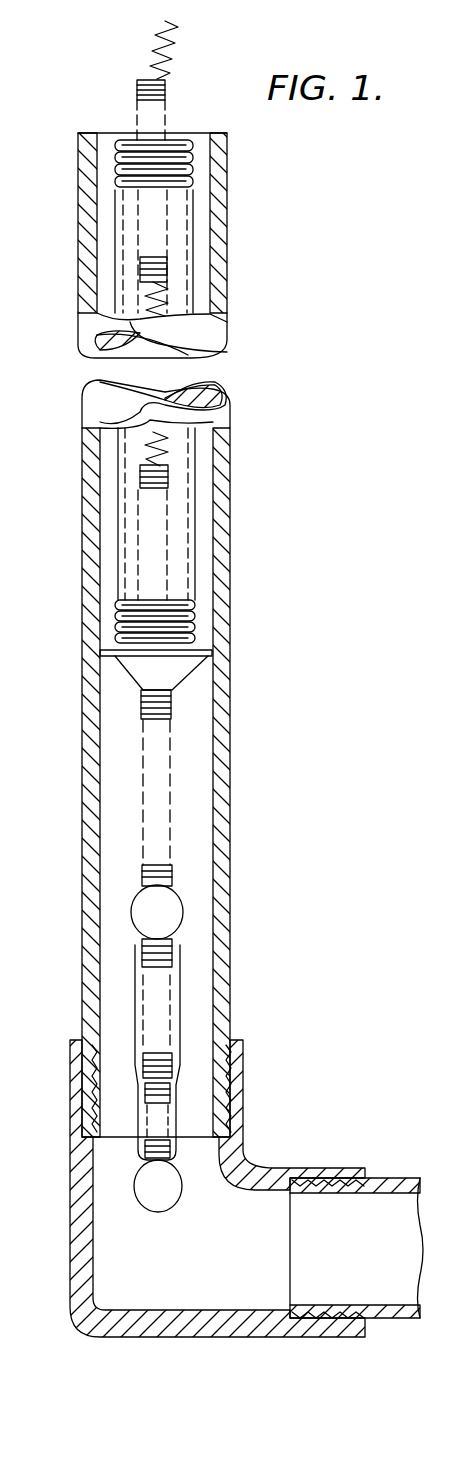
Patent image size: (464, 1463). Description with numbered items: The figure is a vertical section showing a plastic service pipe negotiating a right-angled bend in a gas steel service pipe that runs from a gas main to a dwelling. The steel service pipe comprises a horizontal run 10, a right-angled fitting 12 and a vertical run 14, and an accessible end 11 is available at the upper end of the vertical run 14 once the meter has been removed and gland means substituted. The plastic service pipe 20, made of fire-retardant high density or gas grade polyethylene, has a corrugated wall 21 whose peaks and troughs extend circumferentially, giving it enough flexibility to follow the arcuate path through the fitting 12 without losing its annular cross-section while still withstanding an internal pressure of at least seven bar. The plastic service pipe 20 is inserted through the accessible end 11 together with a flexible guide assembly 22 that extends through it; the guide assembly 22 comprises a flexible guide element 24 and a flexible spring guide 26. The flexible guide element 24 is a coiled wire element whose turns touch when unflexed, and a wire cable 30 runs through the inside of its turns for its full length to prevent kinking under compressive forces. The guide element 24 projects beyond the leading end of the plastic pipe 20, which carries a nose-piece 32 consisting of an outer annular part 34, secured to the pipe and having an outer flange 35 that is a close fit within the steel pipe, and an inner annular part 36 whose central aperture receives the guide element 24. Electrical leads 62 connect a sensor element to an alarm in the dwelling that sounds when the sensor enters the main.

The horizontal run 10 is at (393, 1187).
The accessible end 11 is at (97, 112).
The right-angled fitting 12 is at (232, 1150).
The vertical run 14 is at (220, 219).
The plastic service pipe 20 is at (200, 152).
The corrugated wall 21 is at (190, 178).
The flexible guide assembly 22 is at (188, 817).
The flexible guide element 24 is at (166, 89).
The flexible spring guide 26 is at (190, 986).
The wire cable 30 is at (222, 334).
The nose-piece 32 is at (198, 673).
The outer annular part 34 is at (132, 667).
The outer flange 35 is at (205, 640).
The inner annular part 36 is at (168, 688).
The electrical leads 62 is at (181, 50).